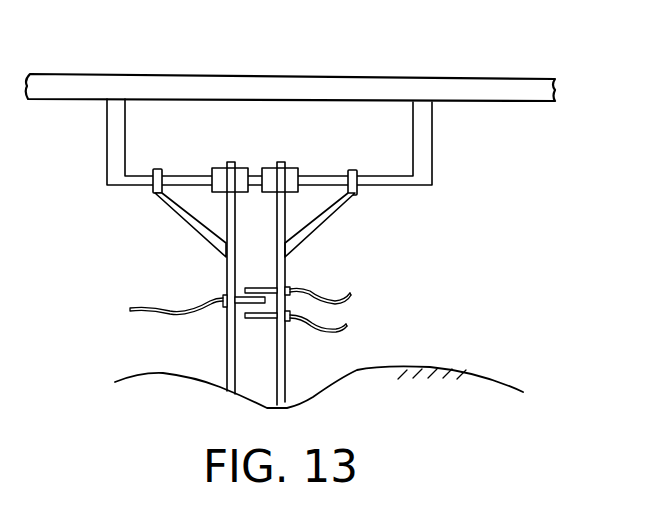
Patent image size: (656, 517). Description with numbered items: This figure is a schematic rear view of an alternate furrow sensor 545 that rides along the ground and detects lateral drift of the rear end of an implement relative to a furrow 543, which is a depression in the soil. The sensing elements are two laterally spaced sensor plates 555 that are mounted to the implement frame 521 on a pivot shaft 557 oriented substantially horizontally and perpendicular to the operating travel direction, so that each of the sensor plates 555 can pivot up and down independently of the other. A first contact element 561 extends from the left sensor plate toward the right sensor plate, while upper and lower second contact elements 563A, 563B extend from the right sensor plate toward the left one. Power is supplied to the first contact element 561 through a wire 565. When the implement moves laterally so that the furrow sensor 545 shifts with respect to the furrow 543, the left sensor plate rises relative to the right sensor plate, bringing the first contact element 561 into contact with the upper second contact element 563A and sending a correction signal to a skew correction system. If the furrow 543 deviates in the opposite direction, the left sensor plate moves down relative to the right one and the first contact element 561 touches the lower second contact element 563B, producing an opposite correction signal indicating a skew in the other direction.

The implement frame 521 is at (470, 78).
The pivot shaft 557 is at (388, 187).
The furrow sensor 545 is at (507, 275).
The furrow 543 is at (302, 398).
The sensor plates 555 is at (226, 362).
The first contact element 561 is at (240, 308).
The upper second contact element 563A is at (257, 288).
The lower second contact element 563B is at (259, 319).
The wire 565 is at (182, 305).